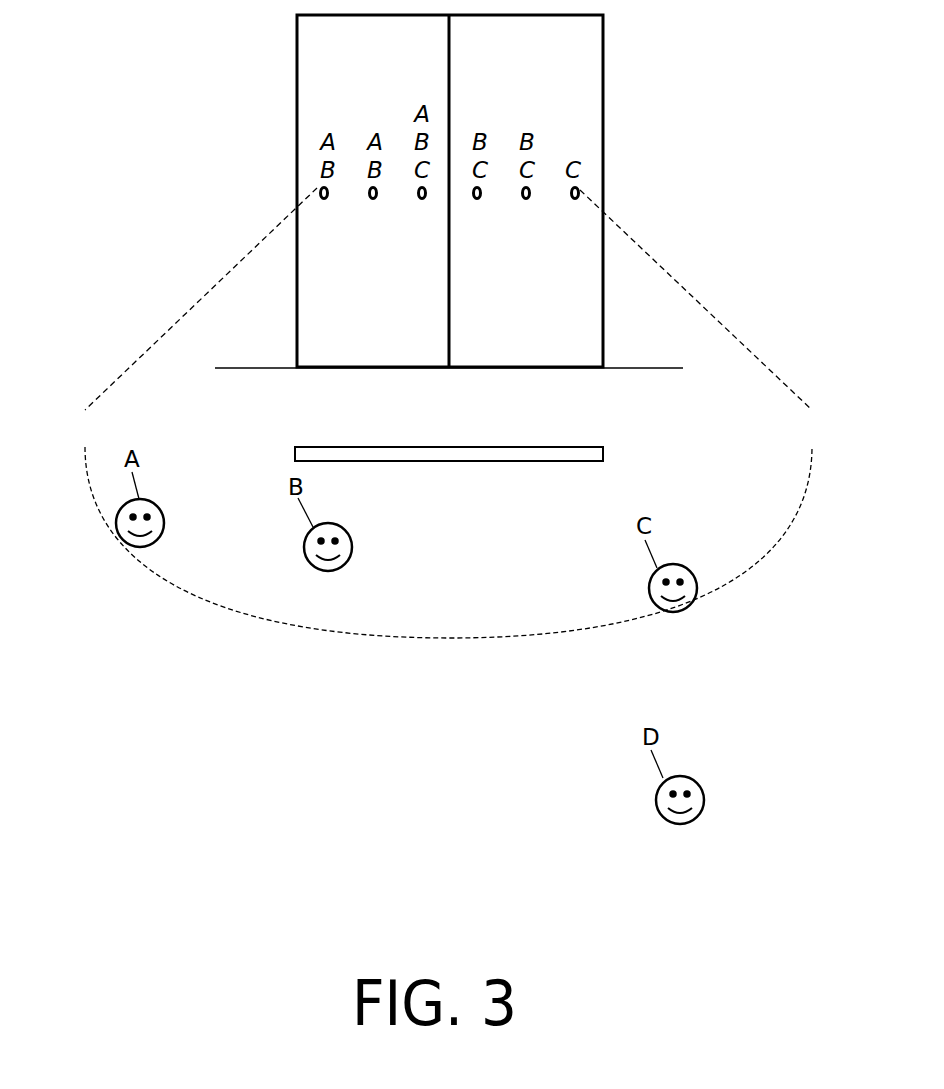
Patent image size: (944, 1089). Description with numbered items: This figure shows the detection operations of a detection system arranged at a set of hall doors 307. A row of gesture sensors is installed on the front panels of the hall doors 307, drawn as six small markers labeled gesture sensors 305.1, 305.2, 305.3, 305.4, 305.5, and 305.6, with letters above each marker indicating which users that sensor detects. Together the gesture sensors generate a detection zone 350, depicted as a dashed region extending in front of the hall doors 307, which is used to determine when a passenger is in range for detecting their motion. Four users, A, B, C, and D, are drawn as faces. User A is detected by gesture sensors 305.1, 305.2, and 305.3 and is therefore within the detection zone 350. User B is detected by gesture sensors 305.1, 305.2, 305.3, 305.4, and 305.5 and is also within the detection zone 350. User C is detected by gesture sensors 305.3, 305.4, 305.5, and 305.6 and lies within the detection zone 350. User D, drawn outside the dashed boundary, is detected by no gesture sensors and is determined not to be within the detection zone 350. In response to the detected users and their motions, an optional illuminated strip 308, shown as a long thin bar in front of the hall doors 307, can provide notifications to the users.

The set of hall doors 307 is at (297, 58).
The gesture sensor 305.1 is at (326, 200).
The gesture sensor 305.2 is at (372, 200).
The gesture sensor 305.3 is at (420, 200).
The gesture sensor 305.4 is at (478, 200).
The gesture sensor 305.5 is at (525, 200).
The gesture sensor 305.6 is at (572, 200).
The illuminated strip 308 is at (533, 461).
The detection zone 350 is at (187, 602).